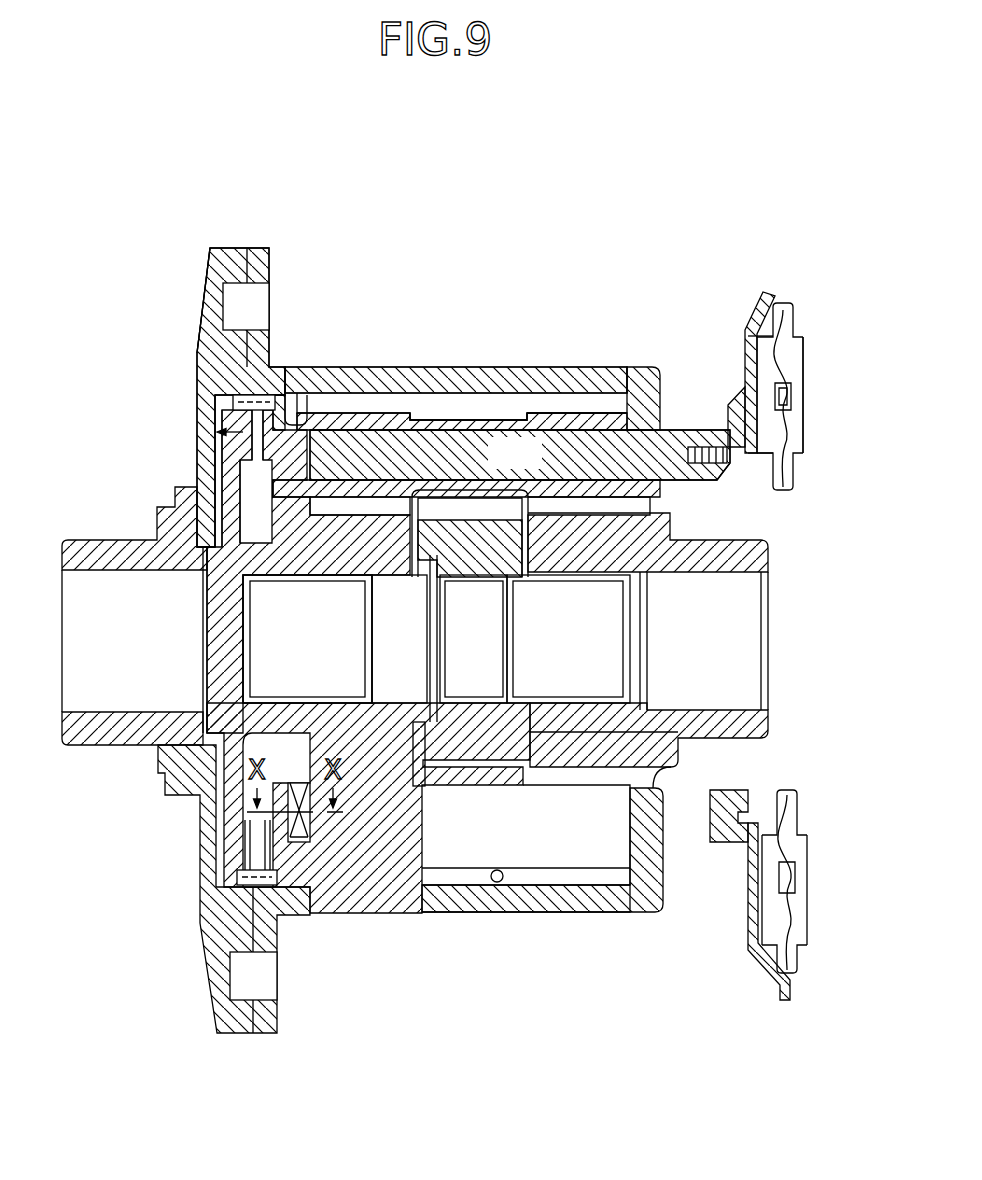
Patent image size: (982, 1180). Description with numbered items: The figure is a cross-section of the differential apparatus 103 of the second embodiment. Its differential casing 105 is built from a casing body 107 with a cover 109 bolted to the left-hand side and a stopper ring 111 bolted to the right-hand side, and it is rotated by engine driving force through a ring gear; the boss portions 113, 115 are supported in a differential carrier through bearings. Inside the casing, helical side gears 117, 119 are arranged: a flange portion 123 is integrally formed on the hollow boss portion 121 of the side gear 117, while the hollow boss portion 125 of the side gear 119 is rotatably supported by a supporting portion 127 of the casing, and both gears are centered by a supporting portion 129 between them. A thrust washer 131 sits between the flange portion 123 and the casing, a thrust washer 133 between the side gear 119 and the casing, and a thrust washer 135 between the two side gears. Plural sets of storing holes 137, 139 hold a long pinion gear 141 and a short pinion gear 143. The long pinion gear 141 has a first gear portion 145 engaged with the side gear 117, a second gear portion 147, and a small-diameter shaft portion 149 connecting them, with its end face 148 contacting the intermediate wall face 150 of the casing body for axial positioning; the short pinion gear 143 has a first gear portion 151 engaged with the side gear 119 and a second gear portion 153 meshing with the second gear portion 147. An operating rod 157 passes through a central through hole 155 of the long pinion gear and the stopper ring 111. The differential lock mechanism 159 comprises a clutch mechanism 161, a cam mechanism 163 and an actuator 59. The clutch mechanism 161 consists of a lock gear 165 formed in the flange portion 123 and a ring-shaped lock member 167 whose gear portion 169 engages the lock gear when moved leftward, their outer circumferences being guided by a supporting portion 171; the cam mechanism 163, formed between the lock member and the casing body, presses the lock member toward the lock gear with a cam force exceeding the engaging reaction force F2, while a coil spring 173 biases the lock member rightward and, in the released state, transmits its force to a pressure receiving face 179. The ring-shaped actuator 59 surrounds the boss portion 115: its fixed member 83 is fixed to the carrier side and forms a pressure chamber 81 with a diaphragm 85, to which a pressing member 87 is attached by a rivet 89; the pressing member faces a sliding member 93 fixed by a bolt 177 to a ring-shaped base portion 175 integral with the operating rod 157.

The actuator 59 is at (800, 297).
The pressure chamber 81 is at (796, 440).
The fixed member 83 is at (804, 349).
The diaphragm 85 is at (786, 352).
The pressing member 87 is at (791, 381).
The rivet 89 is at (791, 404).
The sliding member 93 is at (748, 318).
The differential apparatus 103 is at (613, 290).
The differential casing 105 is at (248, 247).
The casing body 107 is at (417, 367).
The cover 109 is at (197, 366).
The stopper ring 111 is at (648, 368).
The boss portion 113 is at (87, 540).
The boss portion 115 is at (742, 542).
The side gear 117 is at (362, 772).
The side gear 119 is at (473, 516).
The hollow boss portion 121 is at (272, 706).
The flange portion 123 is at (230, 395).
The hollow boss portion 125 is at (592, 762).
The supporting portion 127 is at (552, 748).
The supporting portion 129 is at (413, 569).
The thrust washer 131 is at (215, 522).
The thrust washer 133 is at (526, 552).
The thrust washer 135 is at (416, 718).
The storing hole 137 is at (495, 377).
The storing hole 139 is at (498, 887).
The long pinion gear 141 is at (563, 387).
The short pinion gear 143 is at (605, 896).
The first gear portion 145 is at (375, 405).
The second gear portion 147 is at (608, 405).
The end face 148 is at (292, 408).
The shaft portion 149 is at (511, 398).
The intermediate wall face 150 is at (333, 397).
The first gear portion 151 is at (445, 880).
The second gear portion 153 is at (557, 880).
The through hole 155 is at (453, 479).
The operating rod 157 is at (490, 467).
The differential lock mechanism 159 is at (172, 241).
The clutch mechanism 161 is at (257, 526).
The cam mechanism 163 is at (300, 851).
The lock gear 165 is at (247, 458).
The lock member 167 is at (291, 492).
The gear portion 169 is at (258, 463).
The supporting portion 171 is at (240, 883).
The coil spring 173 is at (213, 363).
The base portion 175 is at (730, 843).
The bolt 177 is at (733, 462).
The pressure receiving face 179 is at (298, 378).
The engaging reaction force F2 is at (197, 404).